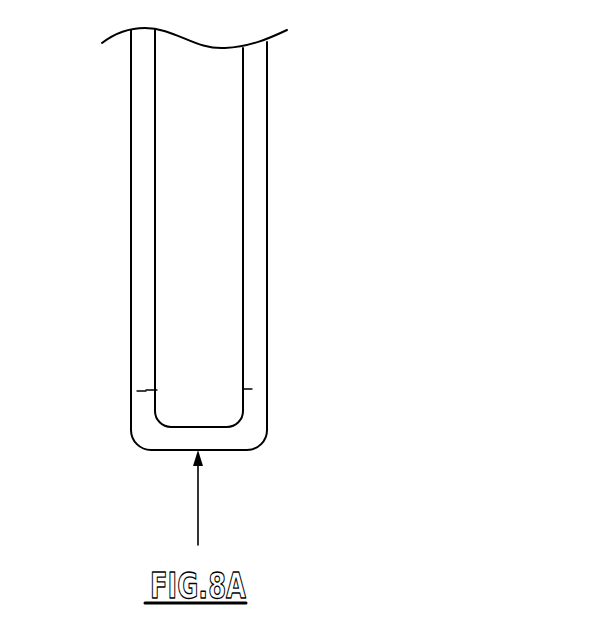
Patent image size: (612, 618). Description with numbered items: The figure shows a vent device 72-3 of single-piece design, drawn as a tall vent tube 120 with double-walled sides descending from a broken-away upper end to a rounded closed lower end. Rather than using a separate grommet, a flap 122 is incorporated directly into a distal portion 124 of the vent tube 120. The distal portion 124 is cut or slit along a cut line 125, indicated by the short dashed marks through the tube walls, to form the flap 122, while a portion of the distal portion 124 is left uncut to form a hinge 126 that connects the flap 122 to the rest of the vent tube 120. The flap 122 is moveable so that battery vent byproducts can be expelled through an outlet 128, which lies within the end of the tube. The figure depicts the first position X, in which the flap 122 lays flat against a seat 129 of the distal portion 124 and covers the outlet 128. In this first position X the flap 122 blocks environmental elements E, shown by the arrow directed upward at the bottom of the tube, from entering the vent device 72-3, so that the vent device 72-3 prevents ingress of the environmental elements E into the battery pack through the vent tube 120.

The vent device 72-3 is at (313, 157).
The vent tube 120 is at (143, 131).
The flap 122 is at (209, 434).
The distal portion 124 is at (278, 388).
The hinge 126 is at (256, 383).
The outlet 128 is at (222, 389).
The seat 129 is at (150, 388).
The cut line 125 is at (136, 391).
The environmental elements E is at (200, 505).
The first position X is at (88, 448).